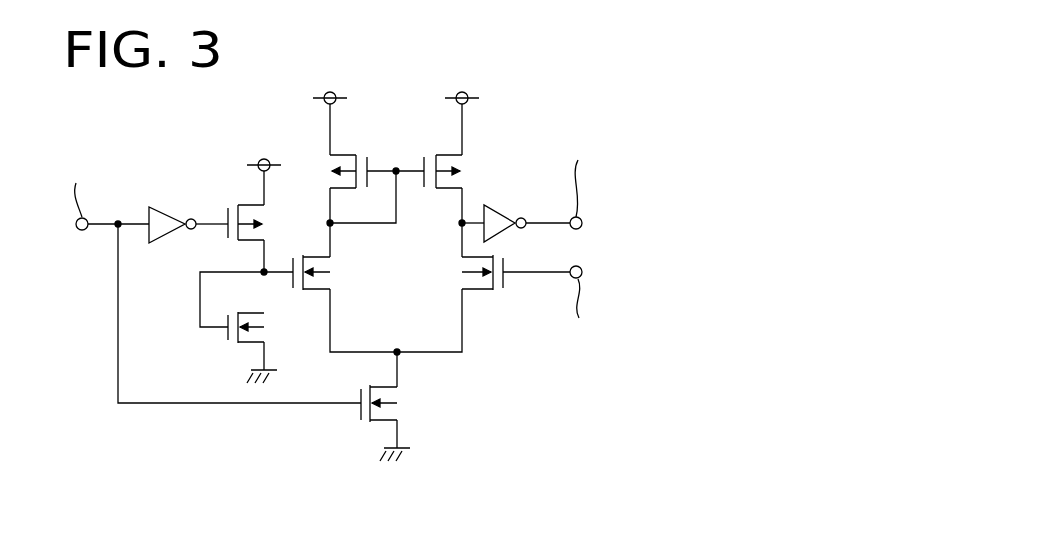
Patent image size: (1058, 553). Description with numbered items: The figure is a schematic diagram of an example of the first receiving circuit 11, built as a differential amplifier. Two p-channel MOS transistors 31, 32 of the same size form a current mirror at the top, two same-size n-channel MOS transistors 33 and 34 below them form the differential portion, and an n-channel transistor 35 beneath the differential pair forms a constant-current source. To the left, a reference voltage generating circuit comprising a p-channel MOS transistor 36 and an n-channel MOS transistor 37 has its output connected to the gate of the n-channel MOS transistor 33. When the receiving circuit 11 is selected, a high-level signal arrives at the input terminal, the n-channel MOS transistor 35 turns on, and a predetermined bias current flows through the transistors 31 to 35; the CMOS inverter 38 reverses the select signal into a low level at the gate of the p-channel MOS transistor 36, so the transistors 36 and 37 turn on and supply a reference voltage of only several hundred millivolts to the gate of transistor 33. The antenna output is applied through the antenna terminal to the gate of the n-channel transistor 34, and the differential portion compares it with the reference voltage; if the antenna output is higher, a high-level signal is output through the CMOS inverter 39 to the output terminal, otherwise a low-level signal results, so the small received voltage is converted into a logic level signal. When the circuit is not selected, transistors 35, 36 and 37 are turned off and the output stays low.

The first receiving circuit 11 is at (388, 100).
The p-channel MOS transistor 31 is at (328, 170).
The p-channel MOS transistor 32 is at (463, 168).
The n-channel MOS transistor 33 is at (306, 292).
The n-channel MOS transistor 34 is at (490, 292).
The n-channel transistor 35 is at (400, 403).
The p-channel MOS transistor 36 is at (243, 202).
The n-channel MOS transistor 37 is at (226, 330).
The CMOS inverter 38 is at (163, 205).
The CMOS inverter 39 is at (501, 206).